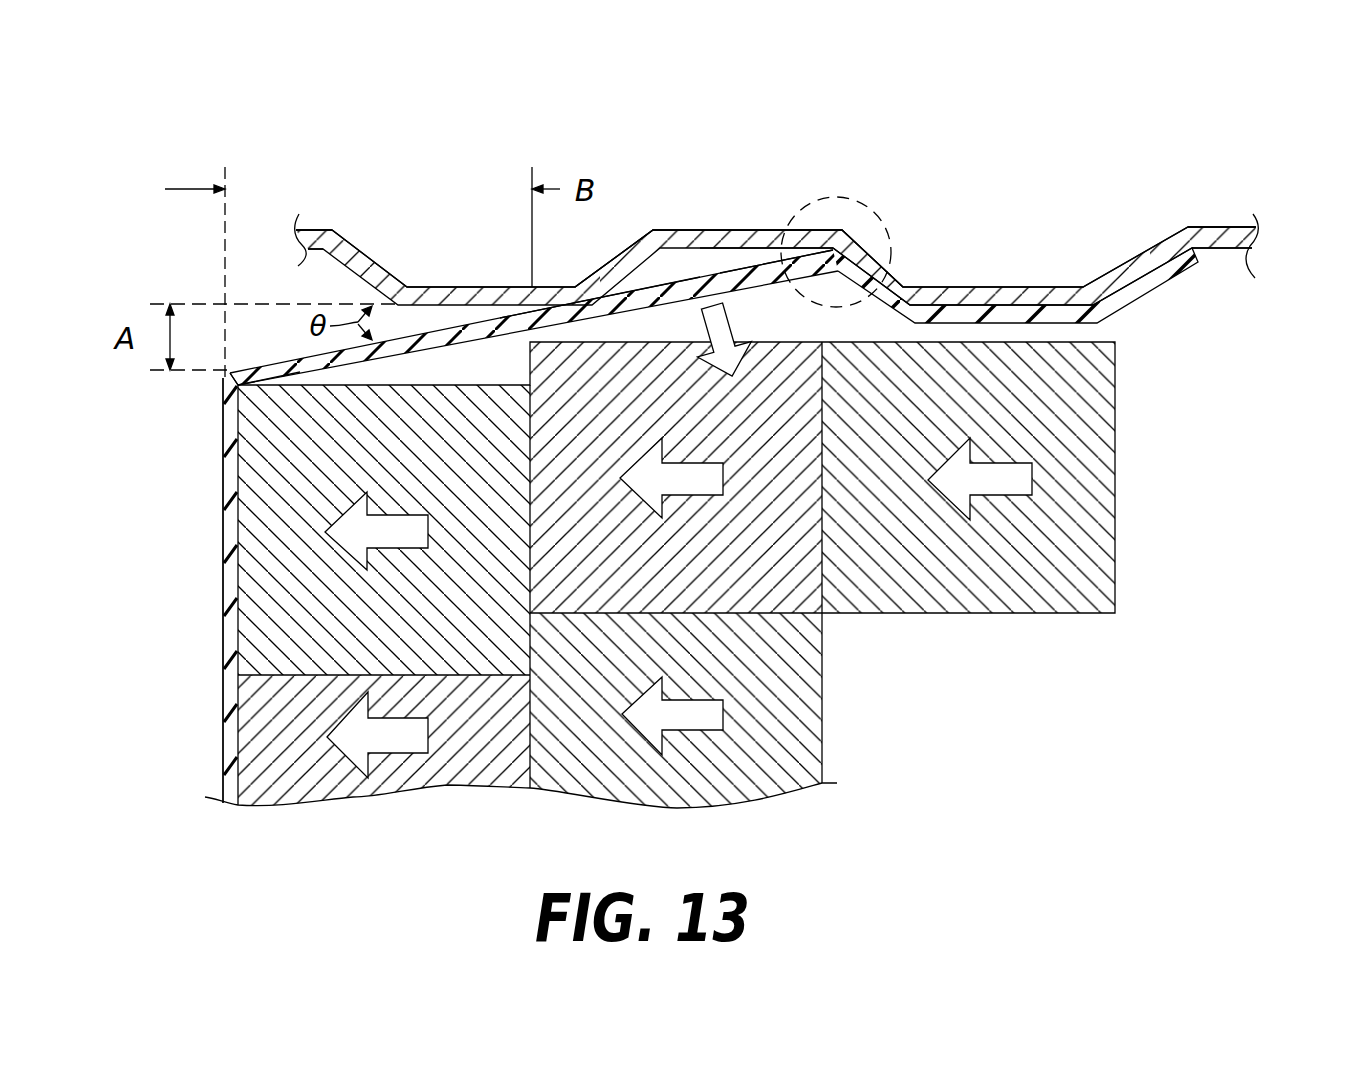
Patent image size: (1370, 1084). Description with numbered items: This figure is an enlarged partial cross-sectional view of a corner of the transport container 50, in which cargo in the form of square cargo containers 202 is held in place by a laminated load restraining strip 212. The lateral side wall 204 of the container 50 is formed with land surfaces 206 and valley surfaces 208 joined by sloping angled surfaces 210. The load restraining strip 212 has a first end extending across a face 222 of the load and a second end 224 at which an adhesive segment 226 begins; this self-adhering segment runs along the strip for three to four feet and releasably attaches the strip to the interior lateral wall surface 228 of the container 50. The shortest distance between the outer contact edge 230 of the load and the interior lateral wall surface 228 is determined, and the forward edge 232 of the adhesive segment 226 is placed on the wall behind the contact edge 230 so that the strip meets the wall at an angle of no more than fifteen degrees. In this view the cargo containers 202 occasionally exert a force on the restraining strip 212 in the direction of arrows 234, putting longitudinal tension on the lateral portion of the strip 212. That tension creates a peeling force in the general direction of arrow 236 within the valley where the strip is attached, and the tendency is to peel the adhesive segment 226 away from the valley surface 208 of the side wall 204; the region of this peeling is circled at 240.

The transport container 50 is at (1248, 155).
The cargo containers 202 is at (1116, 480).
The lateral side walls 204 is at (316, 228).
The land surfaces 206 is at (1018, 310).
The valley surfaces 208 is at (772, 262).
The sloping angled surfaces 210 is at (640, 270).
The load restraining strip 212 is at (223, 725).
The face of a load 222 is at (222, 558).
The second end 224 is at (1197, 262).
The adhesive segment 226 is at (747, 256).
The interior lateral wall surface 228 is at (414, 307).
The outer contact edge 230 is at (265, 386).
The forward edge of self-adhering portion 232 is at (605, 310).
The arrows 234 is at (419, 549).
The arrow 236 is at (750, 355).
The detail region 240 is at (853, 198).